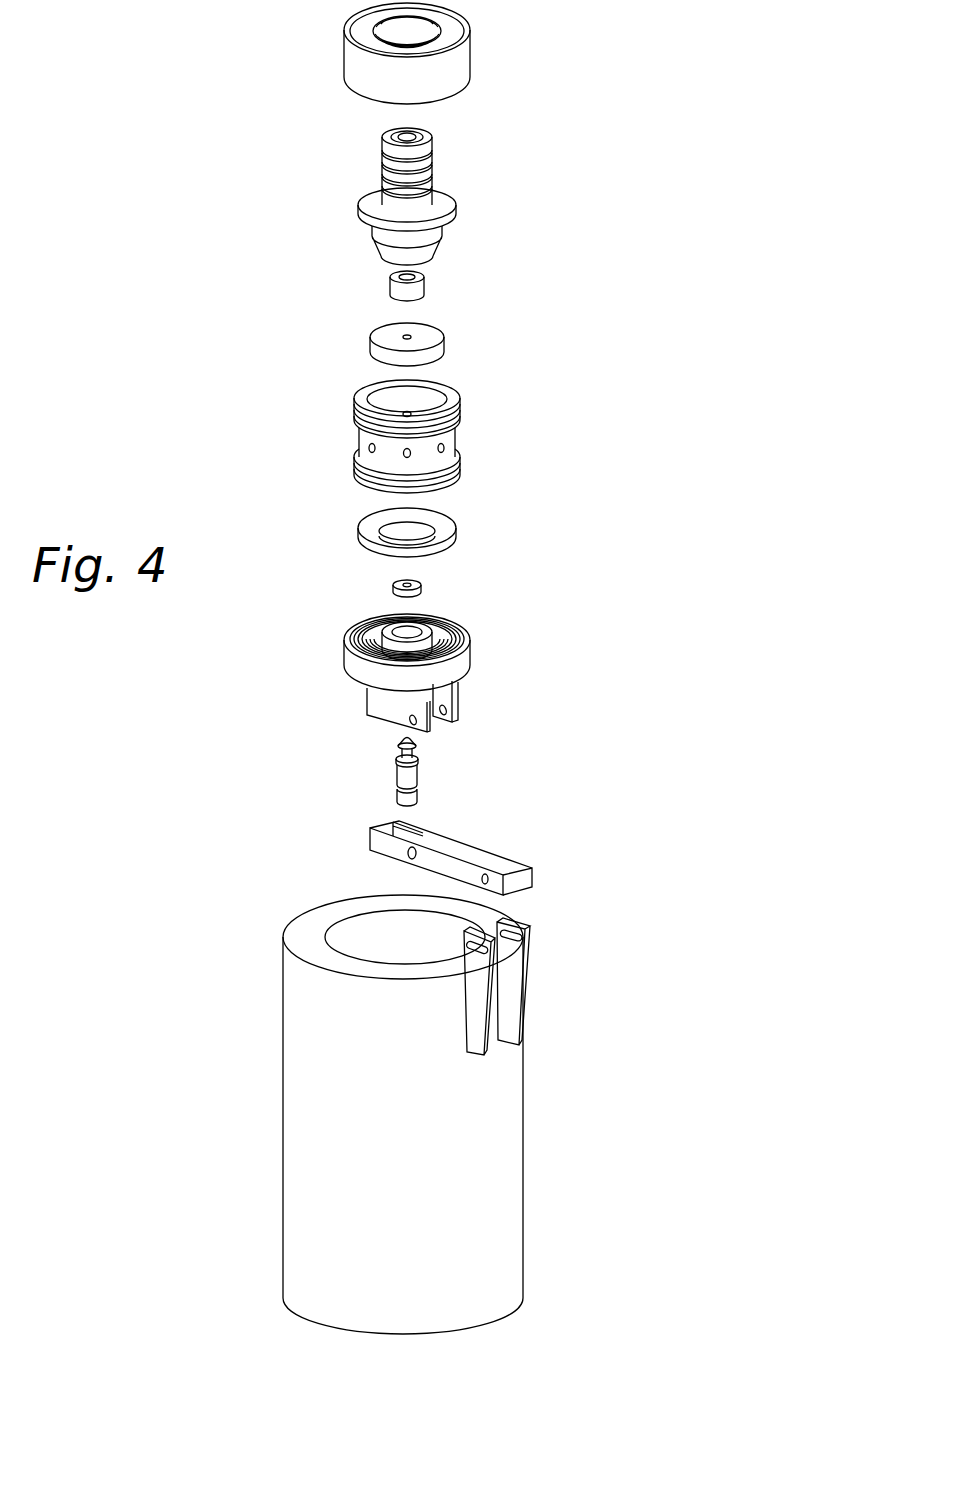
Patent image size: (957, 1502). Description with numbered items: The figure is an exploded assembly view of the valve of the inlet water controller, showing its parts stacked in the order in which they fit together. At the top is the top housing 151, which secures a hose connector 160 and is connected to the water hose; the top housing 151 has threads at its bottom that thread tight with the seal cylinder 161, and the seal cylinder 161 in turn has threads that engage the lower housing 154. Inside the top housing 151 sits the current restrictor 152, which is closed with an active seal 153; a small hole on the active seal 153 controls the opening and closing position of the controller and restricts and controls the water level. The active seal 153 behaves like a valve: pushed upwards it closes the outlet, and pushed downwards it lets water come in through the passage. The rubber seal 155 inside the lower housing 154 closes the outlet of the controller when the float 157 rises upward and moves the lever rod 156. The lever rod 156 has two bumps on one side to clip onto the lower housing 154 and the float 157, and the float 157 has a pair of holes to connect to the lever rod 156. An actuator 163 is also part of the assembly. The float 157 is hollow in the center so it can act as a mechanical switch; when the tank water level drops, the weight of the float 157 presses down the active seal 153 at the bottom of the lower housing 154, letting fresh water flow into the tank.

The top housing 151 is at (470, 60).
The hose connector 160 is at (457, 205).
The current restrictor 152 is at (425, 280).
The active seal 153 is at (445, 333).
The seal cylinder 161 is at (460, 415).
The rubber seal 155 is at (422, 583).
The lower housing 154 is at (470, 645).
The actuator 163 is at (420, 775).
The lever rod 156 is at (478, 846).
The float 157 is at (523, 1153).